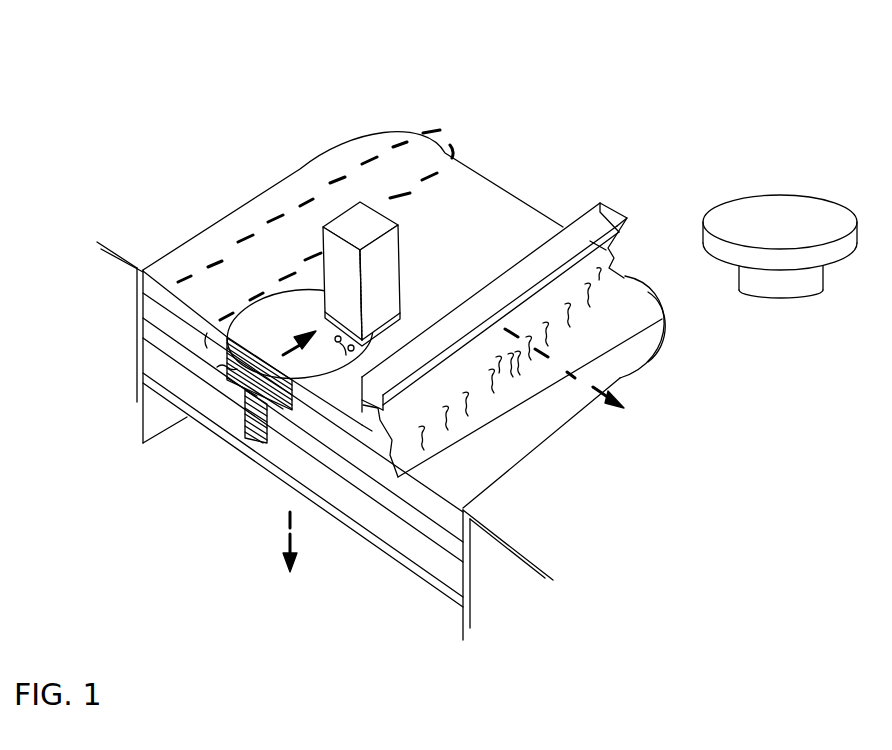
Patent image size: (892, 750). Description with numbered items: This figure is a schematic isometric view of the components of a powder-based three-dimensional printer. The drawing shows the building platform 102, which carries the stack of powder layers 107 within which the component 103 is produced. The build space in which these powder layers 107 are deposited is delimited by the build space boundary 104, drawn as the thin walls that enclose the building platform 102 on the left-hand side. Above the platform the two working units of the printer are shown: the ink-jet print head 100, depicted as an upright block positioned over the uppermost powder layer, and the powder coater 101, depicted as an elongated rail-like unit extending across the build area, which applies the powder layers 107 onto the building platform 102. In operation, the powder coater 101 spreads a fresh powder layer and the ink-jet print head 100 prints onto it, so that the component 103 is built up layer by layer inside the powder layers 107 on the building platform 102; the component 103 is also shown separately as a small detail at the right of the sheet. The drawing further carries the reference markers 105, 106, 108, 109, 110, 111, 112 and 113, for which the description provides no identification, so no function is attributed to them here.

The ink-jet print head 100 is at (389, 278).
The powder coater 101 is at (546, 258).
The building platform 102 is at (197, 432).
The component 103 is at (260, 317).
The build space boundary 104 is at (133, 353).
The signal path 105 is at (332, 168).
The rounded end portion 106 is at (570, 380).
The powder layers 107 is at (452, 551).
The feed direction arrow 108 is at (278, 545).
The contact point 109 is at (340, 361).
The heating zone 110 is at (610, 258).
The cover hood 111 is at (260, 182).
The plate edge 112 is at (379, 431).
The top surface 113 is at (373, 437).